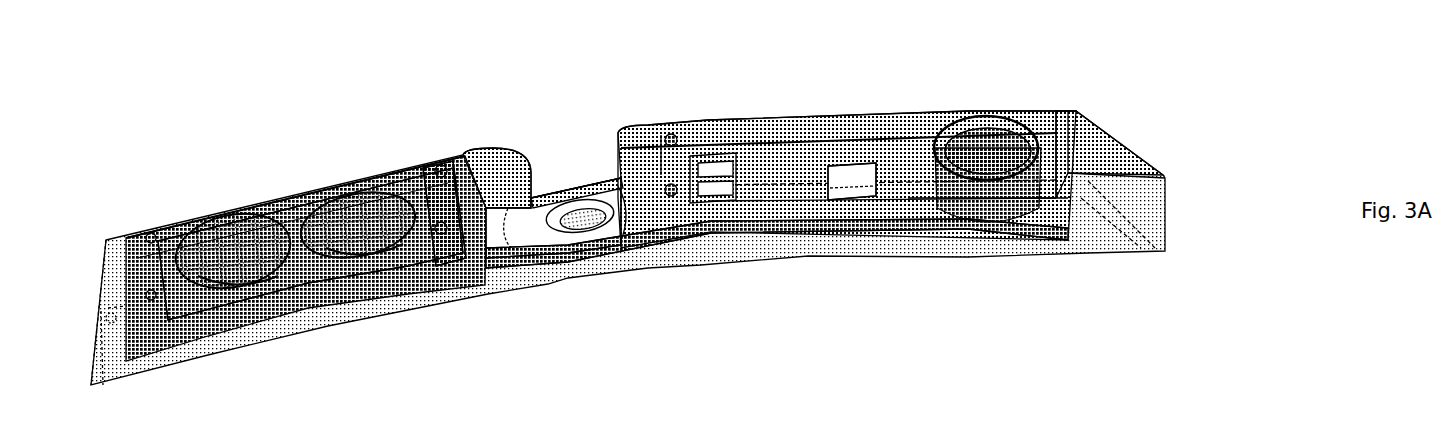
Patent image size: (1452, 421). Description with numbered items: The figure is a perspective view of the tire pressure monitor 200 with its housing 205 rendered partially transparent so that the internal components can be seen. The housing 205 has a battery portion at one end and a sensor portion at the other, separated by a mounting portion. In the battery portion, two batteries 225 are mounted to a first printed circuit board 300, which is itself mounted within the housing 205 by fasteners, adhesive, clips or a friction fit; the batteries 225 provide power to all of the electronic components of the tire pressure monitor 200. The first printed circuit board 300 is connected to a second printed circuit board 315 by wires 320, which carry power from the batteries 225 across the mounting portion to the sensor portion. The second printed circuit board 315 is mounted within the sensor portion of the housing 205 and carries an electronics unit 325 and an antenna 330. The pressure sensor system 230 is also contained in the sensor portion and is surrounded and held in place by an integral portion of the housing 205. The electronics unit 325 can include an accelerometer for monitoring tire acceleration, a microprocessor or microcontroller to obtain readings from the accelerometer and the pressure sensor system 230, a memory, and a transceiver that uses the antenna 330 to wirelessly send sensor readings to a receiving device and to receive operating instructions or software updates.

The tire pressure monitor 200 is at (210, 152).
The housing 205 is at (1107, 150).
The battery 225 is at (340, 263).
The pressure sensor system 230 is at (977, 137).
The first printed circuit board 300 is at (427, 277).
The second printed circuit board 315 is at (900, 223).
The wires 320 is at (660, 237).
The electronics unit 325 is at (840, 170).
The antenna 330 is at (690, 143).